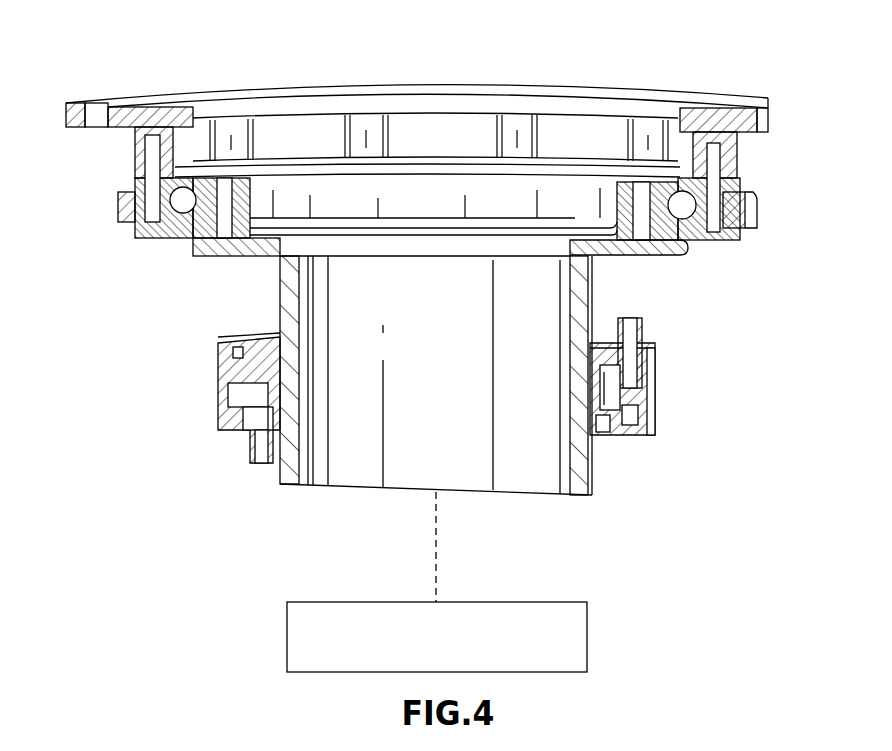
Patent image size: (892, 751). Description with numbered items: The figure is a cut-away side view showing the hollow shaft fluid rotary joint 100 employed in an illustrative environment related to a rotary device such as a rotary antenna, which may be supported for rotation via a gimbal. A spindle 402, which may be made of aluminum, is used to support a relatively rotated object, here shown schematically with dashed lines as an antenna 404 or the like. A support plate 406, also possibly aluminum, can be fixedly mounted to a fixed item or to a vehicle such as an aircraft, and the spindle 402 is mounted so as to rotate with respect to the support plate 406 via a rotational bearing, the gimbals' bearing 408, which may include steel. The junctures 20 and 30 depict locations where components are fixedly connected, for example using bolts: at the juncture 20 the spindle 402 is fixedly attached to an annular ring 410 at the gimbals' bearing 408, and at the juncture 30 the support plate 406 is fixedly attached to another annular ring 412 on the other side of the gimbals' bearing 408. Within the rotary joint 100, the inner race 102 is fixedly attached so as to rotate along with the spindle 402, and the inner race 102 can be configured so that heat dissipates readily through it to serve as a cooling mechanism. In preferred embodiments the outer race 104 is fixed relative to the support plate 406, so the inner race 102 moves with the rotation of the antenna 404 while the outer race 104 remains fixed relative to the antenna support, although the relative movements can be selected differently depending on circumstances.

The support plate 406 is at (433, 107).
The juncture 30 is at (742, 160).
The annular ring 412 is at (152, 213).
The gimbals' bearing 408 is at (182, 203).
The annular ring 410 is at (417, 198).
The juncture 20 is at (695, 253).
The hollow shaft fluid rotary joint 100 is at (680, 411).
The outer race 104 is at (652, 413).
The inner race 102 is at (589, 432).
The spindle 402 is at (472, 470).
The antenna 404 is at (587, 632).